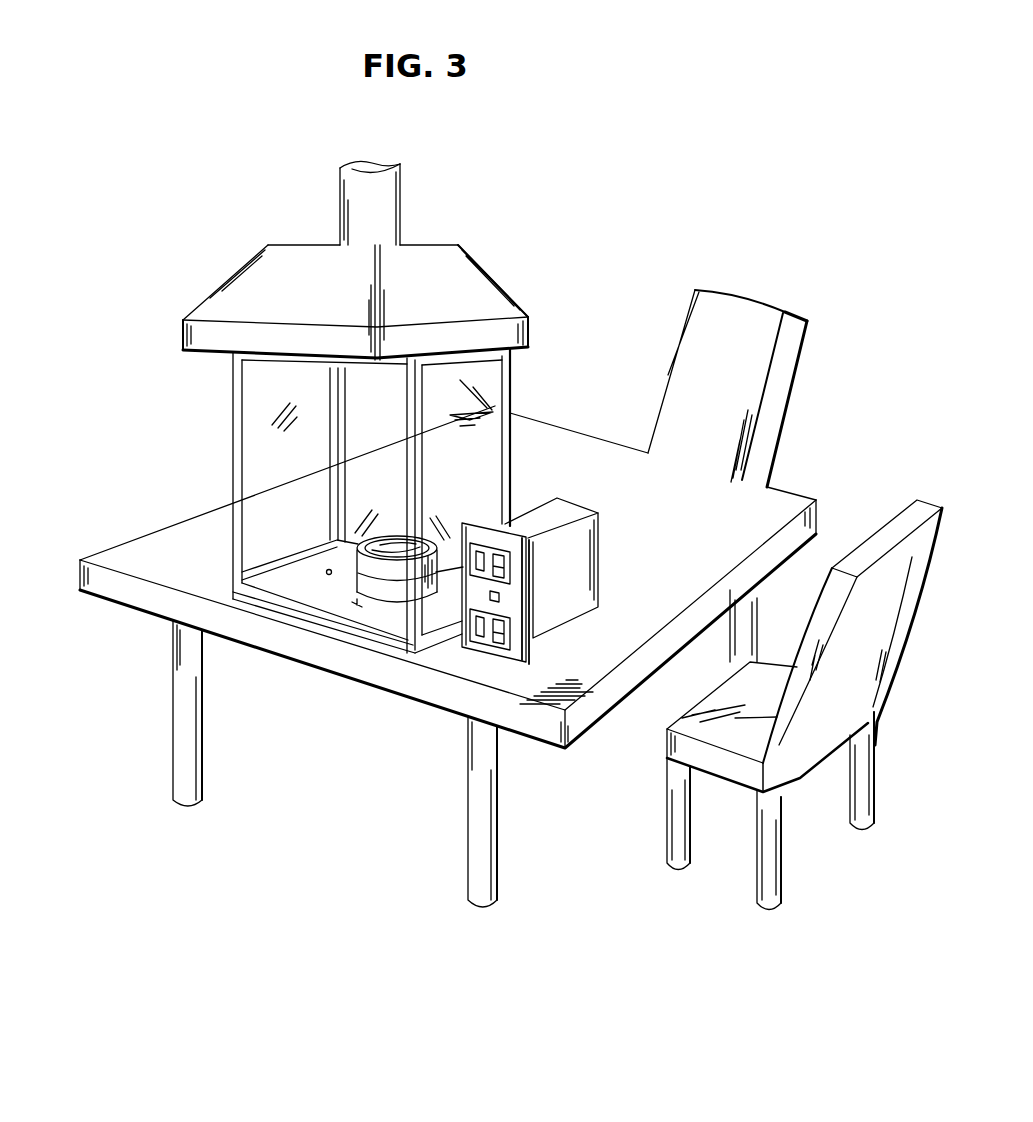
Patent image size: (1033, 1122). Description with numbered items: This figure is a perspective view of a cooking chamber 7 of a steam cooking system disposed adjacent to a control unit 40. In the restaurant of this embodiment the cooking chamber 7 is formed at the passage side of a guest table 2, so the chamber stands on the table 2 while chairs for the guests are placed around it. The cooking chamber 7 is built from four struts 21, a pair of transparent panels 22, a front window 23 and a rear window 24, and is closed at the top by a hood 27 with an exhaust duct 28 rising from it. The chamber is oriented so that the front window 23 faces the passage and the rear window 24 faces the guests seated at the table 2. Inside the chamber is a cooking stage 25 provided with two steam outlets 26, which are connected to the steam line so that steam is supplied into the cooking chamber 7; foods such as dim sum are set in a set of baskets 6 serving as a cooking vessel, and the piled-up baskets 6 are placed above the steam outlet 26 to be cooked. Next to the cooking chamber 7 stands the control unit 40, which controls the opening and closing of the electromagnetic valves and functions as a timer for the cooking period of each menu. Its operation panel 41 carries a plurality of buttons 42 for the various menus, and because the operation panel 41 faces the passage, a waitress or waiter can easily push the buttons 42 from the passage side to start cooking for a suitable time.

The guest table 2 is at (773, 503).
The baskets 6 is at (385, 600).
The cooking chamber 7 is at (308, 573).
The struts 21 is at (235, 468).
The transparent panels 22 is at (258, 430).
The front window 23 is at (160, 580).
The rear window 24 is at (360, 402).
The cooking stage 25 is at (343, 603).
The steam outlets 26 is at (328, 576).
The hood 27 is at (457, 267).
The exhaust duct 28 is at (387, 205).
The control unit 40 is at (588, 543).
The operation panel 41 is at (485, 602).
The buttons 42 is at (505, 558).